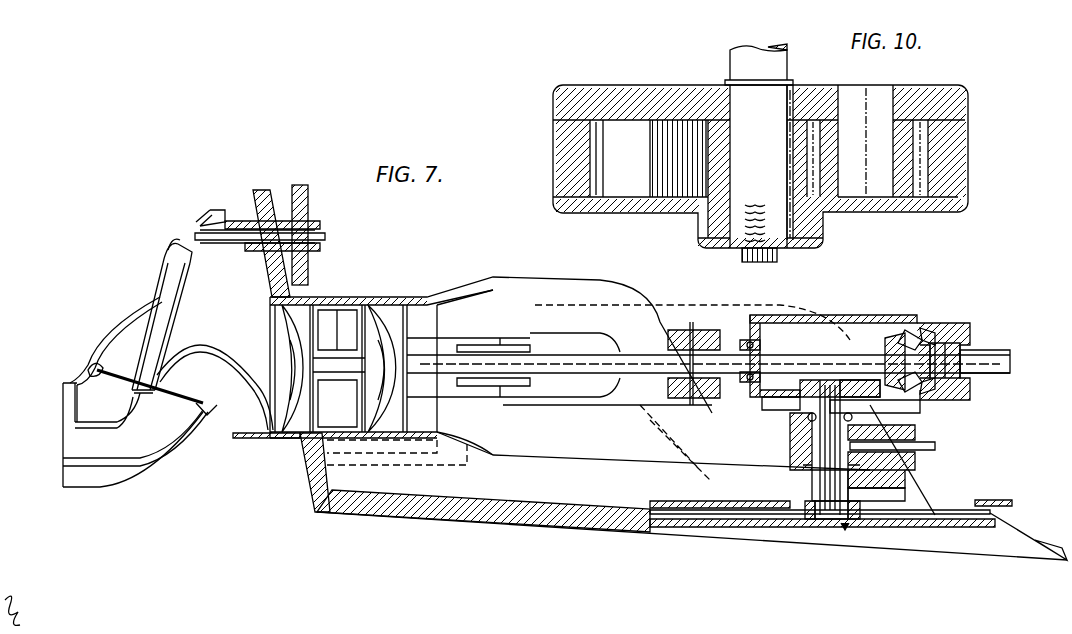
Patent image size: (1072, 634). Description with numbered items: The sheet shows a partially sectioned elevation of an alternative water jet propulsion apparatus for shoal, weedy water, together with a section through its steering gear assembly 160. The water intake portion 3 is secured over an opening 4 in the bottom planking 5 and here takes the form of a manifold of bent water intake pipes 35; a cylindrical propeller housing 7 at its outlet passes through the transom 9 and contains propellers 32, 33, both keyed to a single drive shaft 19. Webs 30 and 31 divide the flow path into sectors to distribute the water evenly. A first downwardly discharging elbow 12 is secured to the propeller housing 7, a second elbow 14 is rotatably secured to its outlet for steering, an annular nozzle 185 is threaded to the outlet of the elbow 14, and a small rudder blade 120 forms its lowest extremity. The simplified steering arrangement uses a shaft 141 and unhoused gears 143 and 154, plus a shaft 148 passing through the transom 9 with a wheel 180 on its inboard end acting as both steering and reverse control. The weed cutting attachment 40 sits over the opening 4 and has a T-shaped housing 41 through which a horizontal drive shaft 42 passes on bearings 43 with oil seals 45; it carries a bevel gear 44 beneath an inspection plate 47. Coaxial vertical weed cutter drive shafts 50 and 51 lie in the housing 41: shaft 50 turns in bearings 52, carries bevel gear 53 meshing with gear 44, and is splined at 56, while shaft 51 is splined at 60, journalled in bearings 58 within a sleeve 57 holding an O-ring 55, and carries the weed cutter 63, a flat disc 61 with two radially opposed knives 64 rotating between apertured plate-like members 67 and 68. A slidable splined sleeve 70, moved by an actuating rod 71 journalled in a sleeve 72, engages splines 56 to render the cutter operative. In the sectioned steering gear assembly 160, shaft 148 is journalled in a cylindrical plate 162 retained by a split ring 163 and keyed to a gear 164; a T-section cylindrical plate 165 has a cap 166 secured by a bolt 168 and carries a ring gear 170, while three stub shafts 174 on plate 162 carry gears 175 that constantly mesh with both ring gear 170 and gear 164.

In FIG. 7, the water intake portion 3 is at (607, 280).
In FIG. 7, the opening 4 is at (915, 548).
In FIG. 7, the bottom planking 5 is at (432, 511).
In FIG. 7, the propeller housing 7 is at (378, 298).
In FIG. 7, the transom 9 is at (312, 507).
In FIG. 7, the first elbow 12 is at (118, 326).
In FIG. 7, the second elbow 14 is at (190, 437).
In FIG. 7, the drive shaft 19 is at (625, 356).
In FIG. 7, the web 30 is at (122, 426).
In FIG. 7, the web 31 is at (108, 405).
In FIG. 7, the propeller 32 is at (298, 312).
In FIG. 7, the propeller 33 is at (405, 310).
In FIG. 7, the water intake pipes 35 is at (680, 310).
In FIG. 7, the weed cutting attachment 40 is at (912, 310).
In FIG. 7, the housing 41 is at (920, 405).
In FIG. 7, the horizontal drive shaft 42 is at (1005, 360).
In FIG. 7, the bearings 43 is at (752, 340).
In FIG. 7, the bevel gear 44 is at (898, 333).
In FIG. 7, the oil seals 45 is at (728, 335).
In FIG. 7, the inspection plate 47 is at (808, 316).
In FIG. 7, the weed cutter drive shaft 50 is at (830, 395).
In FIG. 7, the weed cutter drive shaft 51 is at (830, 525).
In FIG. 7, the bearings 52 is at (805, 398).
In FIG. 7, the bevel gear 53 is at (880, 390).
In FIG. 7, the O-ring 55 is at (810, 527).
In FIG. 7, the splines 56 is at (792, 429).
In FIG. 7, the sleeve 57 is at (858, 525).
In FIG. 7, the bearings 58 is at (880, 479).
In FIG. 7, the splines 60 is at (806, 454).
In FIG. 7, the disc 61 is at (770, 522).
In FIG. 7, the weed cutter 63 is at (845, 530).
In FIG. 7, the knives 64 is at (728, 515).
In FIG. 7, the plate-like member 67 is at (1008, 504).
In FIG. 7, the plate-like member 68 is at (990, 525).
In FIG. 7, the sleeve 70 is at (918, 461).
In FIG. 7, the actuating rod 71 is at (937, 446).
In FIG. 7, the sleeve 72 is at (918, 434).
In FIG. 7, the rudder blade 120 is at (102, 487).
In FIG. 7, the shaft 141 is at (98, 362).
In FIG. 7, the gear 143 is at (172, 250).
In FIG. 10, the shaft 148 is at (769, 54).
In FIG. 7, the gear 154 is at (198, 220).
In FIG. 10, the hub 160 is at (938, 78).
In FIG. 10, the cylindrical plate 162 is at (626, 98).
In FIG. 10, the split ring 163 is at (726, 80).
In FIG. 10, the gear 164 is at (793, 110).
In FIG. 10, the cylindrical plate 165 is at (661, 205).
In FIG. 10, the cap 166 is at (722, 245).
In FIG. 10, the bolt 168 is at (778, 255).
In FIG. 10, the ring gear 170 is at (958, 156).
In FIG. 10, the stub shafts 174 is at (864, 180).
In FIG. 10, the gears 175 is at (651, 164).
In FIG. 7, the wheel 180 is at (308, 202).
In FIG. 7, the annular nozzle 185 is at (70, 445).